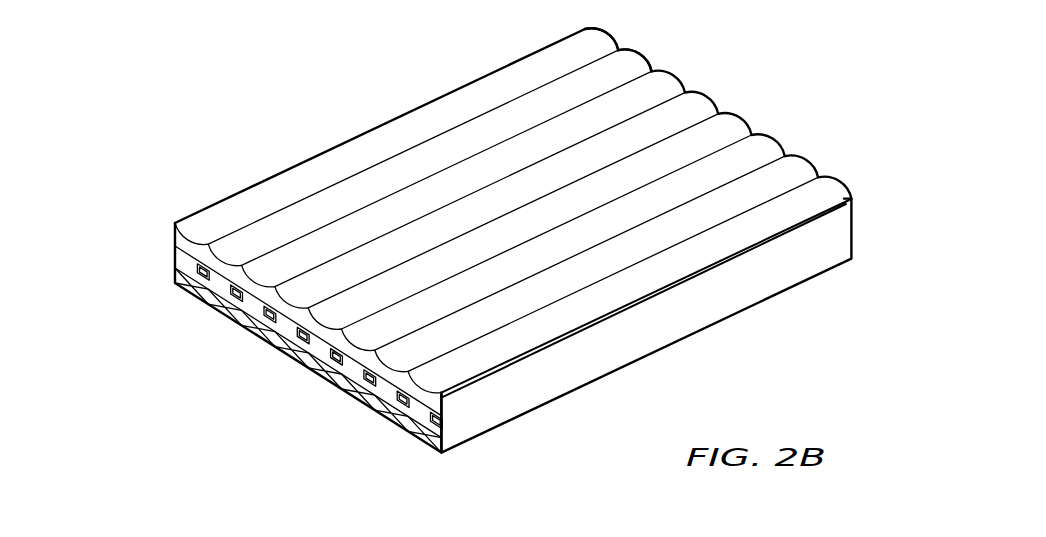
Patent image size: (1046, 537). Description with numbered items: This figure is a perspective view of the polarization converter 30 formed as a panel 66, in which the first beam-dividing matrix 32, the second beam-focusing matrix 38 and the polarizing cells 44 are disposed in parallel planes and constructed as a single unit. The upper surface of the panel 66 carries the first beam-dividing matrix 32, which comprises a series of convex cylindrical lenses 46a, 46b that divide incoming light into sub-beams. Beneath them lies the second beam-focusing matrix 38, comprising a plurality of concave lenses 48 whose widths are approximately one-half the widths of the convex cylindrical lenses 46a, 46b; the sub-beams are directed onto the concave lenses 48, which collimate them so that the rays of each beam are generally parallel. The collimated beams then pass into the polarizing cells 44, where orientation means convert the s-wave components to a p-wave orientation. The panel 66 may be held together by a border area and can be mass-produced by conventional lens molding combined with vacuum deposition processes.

The polarization converter 30 is at (198, 436).
The first beam-dividing matrix 32 is at (175, 222).
The second beam-focusing matrix 38 is at (446, 415).
The polarizing cells 44 is at (367, 405).
The convex cylindrical lens 46a is at (602, 35).
The convex cylindrical lens 46b is at (636, 57).
The concave lenses 48 is at (207, 278).
The panel 66 is at (348, 140).